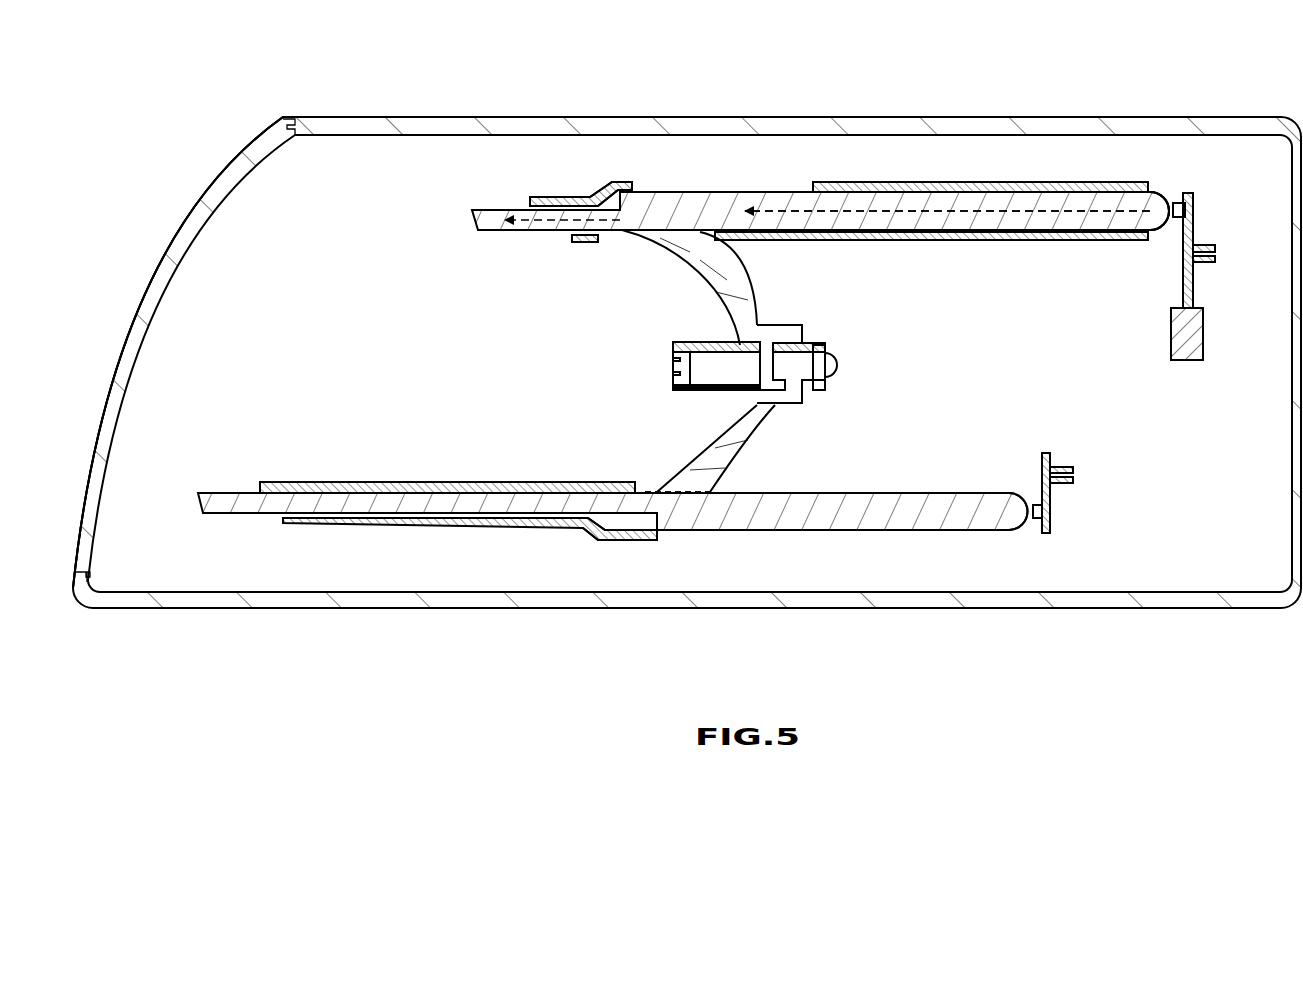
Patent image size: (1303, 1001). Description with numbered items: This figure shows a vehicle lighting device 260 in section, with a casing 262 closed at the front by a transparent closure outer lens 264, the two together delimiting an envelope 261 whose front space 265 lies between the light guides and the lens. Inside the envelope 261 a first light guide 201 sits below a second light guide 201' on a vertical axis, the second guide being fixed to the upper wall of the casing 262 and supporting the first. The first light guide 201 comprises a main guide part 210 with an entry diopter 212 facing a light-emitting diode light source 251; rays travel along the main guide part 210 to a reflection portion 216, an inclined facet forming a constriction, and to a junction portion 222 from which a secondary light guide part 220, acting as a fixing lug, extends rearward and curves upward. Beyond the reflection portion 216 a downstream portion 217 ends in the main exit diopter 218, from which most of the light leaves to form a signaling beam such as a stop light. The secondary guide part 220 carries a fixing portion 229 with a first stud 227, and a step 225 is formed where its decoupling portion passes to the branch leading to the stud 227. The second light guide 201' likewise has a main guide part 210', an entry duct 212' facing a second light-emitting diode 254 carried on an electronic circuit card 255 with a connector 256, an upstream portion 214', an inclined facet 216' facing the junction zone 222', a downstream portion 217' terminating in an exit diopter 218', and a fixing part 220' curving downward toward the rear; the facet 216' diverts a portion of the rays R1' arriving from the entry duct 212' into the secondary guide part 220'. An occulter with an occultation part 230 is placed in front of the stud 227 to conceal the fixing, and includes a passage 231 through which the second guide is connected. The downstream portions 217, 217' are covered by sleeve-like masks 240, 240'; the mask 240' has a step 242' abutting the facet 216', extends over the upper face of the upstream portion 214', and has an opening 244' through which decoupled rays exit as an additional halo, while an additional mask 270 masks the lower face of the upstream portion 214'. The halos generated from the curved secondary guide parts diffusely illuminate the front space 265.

The vehicle lighting device 260 is at (470, 100).
The envelope 261 is at (1077, 612).
The casing 262 is at (435, 608).
The closure outer lens 264 is at (155, 288).
The front space 265 is at (328, 346).
The first light guide 201 is at (613, 584).
The second light guide 201' is at (820, 261).
The main guide part 210 is at (833, 468).
The main guide part of second light guide 210' is at (1047, 258).
The entry diopter 212 is at (1007, 535).
The entry duct 212' is at (1170, 187).
The upstream portion of second main guide part 214' is at (931, 261).
The reflection portion 216 is at (620, 547).
The inclined facet 216' is at (647, 178).
The downstream portion 217 is at (435, 538).
The downstream portion of second guide 217' is at (546, 180).
The main exit diopter 218 is at (412, 482).
The exit diopter of second guide 218' is at (522, 214).
The secondary light guide part 220 is at (678, 448).
The fixing part of second light guide 220' is at (720, 287).
The junction portion 222 is at (683, 531).
The junction zone of second light guide 222' is at (649, 255).
The step 225 is at (730, 388).
The first stud 227 is at (842, 370).
The fixing portion 229 is at (796, 418).
The occultation part 230 is at (672, 368).
The passage 231 is at (790, 325).
The mask 240 is at (447, 322).
The mask of second light guide 240' is at (844, 189).
The step of mask 242' is at (626, 134).
The opening 244' is at (885, 130).
The light source 251 is at (1044, 513).
The light-emitting diode 254 is at (1188, 210).
The electronic circuit card 255 is at (1185, 275).
The connector 256 is at (1215, 254).
The additional mask 270 is at (888, 241).
The light rays R1' is at (828, 214).